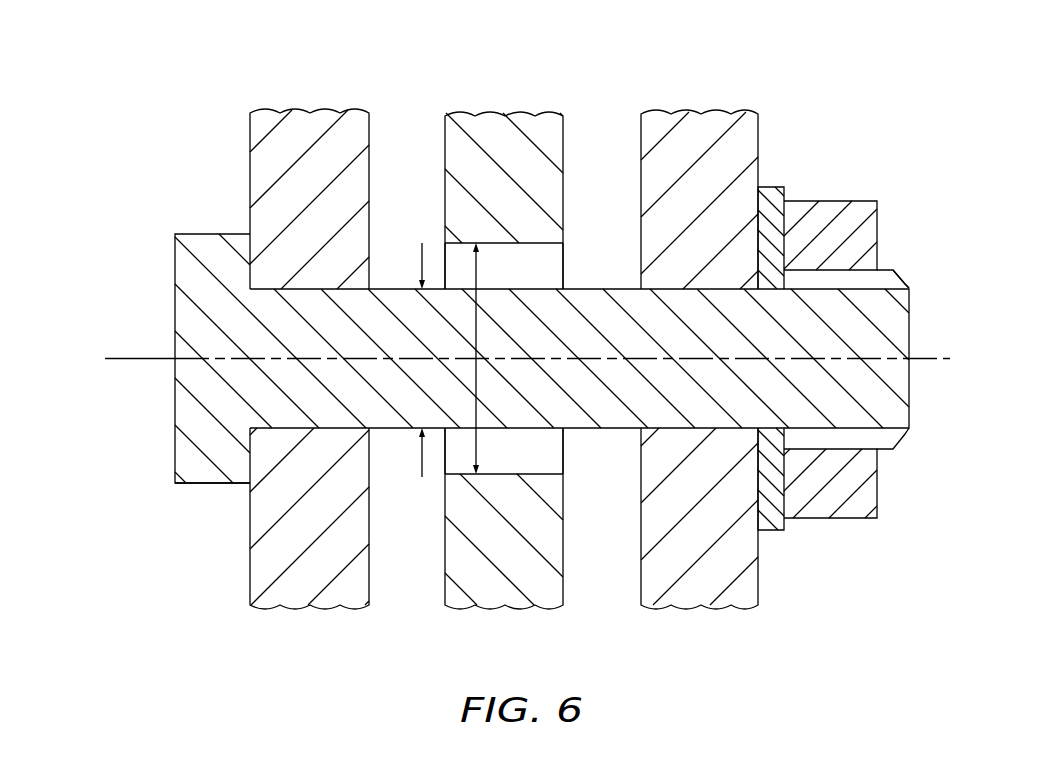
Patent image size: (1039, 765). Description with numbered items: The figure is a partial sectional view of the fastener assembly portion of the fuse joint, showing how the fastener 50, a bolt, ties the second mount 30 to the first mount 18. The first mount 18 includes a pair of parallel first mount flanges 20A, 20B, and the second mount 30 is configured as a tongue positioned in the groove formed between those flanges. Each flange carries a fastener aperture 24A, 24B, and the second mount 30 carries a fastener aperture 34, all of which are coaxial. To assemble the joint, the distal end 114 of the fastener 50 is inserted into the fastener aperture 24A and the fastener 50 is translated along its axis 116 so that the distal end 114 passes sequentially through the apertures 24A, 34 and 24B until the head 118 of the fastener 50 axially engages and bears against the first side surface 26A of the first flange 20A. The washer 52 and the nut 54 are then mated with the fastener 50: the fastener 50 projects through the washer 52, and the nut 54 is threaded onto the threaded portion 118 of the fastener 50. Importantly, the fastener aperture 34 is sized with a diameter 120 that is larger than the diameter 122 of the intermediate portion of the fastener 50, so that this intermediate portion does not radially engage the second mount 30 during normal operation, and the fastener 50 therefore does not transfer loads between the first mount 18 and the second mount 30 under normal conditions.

The first mount 18 is at (514, 313).
The first mount flange 20A is at (300, 111).
The first mount flange 20B is at (720, 111).
The fastener aperture 24A is at (295, 289).
The fastener aperture 24B is at (685, 289).
The first side surface 26A is at (252, 578).
The second mount 30 is at (510, 111).
The fastener aperture 34 is at (512, 243).
The fastener 50 is at (162, 423).
The washer 52 is at (777, 187).
The nut 54 is at (860, 201).
The distal end 114 is at (909, 398).
The axis 116 is at (113, 357).
The head 118 is at (898, 283).
The diameter 120 is at (478, 402).
The diameter 122 is at (420, 458).